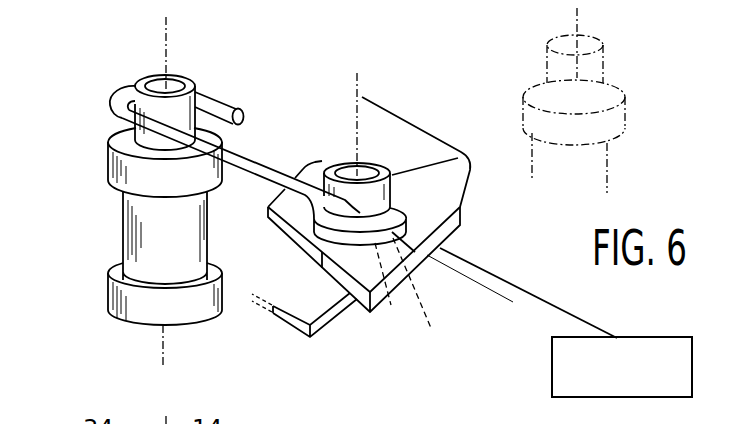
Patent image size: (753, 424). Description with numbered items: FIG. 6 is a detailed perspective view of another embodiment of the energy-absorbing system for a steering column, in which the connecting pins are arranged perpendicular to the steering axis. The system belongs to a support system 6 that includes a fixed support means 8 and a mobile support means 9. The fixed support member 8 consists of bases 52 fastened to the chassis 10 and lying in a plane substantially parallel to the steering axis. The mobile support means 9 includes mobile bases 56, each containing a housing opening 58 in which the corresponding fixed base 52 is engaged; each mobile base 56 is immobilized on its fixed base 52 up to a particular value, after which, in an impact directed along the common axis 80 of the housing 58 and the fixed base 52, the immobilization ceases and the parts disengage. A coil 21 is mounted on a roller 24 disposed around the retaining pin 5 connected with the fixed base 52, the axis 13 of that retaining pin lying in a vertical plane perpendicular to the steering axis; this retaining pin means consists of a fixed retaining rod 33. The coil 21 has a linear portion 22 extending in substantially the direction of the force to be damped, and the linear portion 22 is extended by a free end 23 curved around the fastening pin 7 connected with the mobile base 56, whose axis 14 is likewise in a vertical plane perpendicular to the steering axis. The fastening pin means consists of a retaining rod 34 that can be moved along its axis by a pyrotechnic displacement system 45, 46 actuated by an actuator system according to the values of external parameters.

The retaining pin 5 is at (399, 165).
The support system 6 is at (452, 125).
The fastening pin 7 is at (137, 102).
The fixed support means 8 is at (449, 249).
The mobile support means 9 is at (393, 137).
The chassis 10 is at (603, 382).
The axis of the retaining pin 13 is at (355, 110).
The axis of the fastening pin means 14 is at (170, 41).
The coil 21 is at (396, 230).
The linear portion 22 is at (249, 172).
The free end 23 is at (118, 100).
The roller 24 is at (428, 298).
The fixed retaining rod 33 is at (338, 166).
The retaining rod 34 is at (143, 78).
The pyrotechnic displacement system 45 is at (610, 167).
The pyrotechnic displacement system 46 is at (135, 224).
The fixed base 52 is at (391, 305).
The mobile base 56 is at (284, 292).
The housing opening 58 is at (321, 272).
The common axis 80 is at (478, 282).